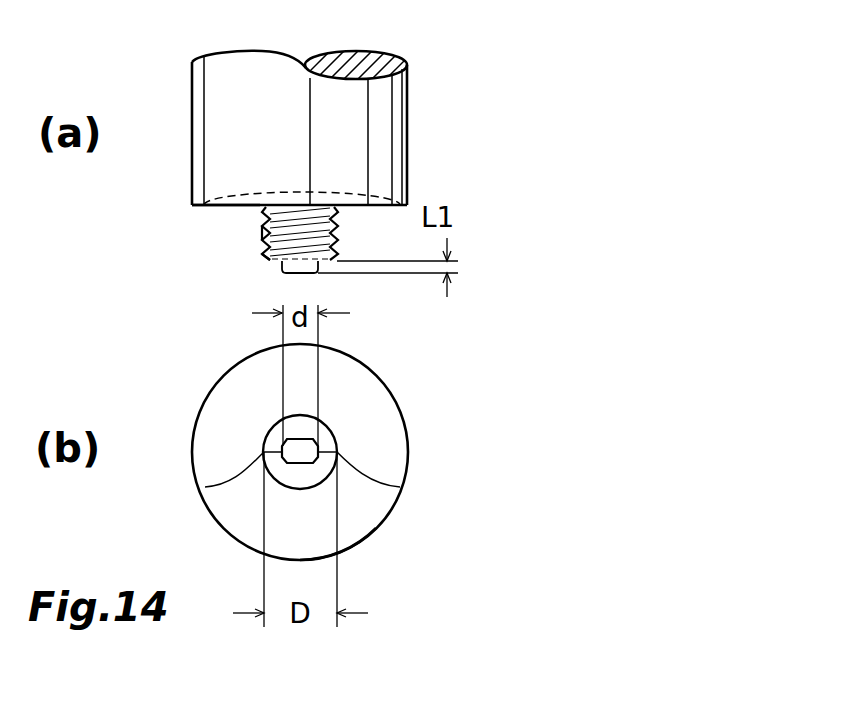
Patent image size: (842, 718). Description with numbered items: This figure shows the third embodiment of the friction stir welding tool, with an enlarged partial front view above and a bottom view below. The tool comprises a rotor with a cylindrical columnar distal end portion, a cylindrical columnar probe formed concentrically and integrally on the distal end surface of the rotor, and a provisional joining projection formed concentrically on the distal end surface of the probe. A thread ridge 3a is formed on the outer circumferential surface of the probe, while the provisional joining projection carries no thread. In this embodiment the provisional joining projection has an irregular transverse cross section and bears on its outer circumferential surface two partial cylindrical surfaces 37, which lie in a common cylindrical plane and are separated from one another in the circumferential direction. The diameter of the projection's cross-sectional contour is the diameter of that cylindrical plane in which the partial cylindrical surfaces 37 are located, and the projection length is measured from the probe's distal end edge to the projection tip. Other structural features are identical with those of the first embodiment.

The thread ridge 3a is at (264, 237).
The partial cylindrical surfaces 37 is at (205, 487).